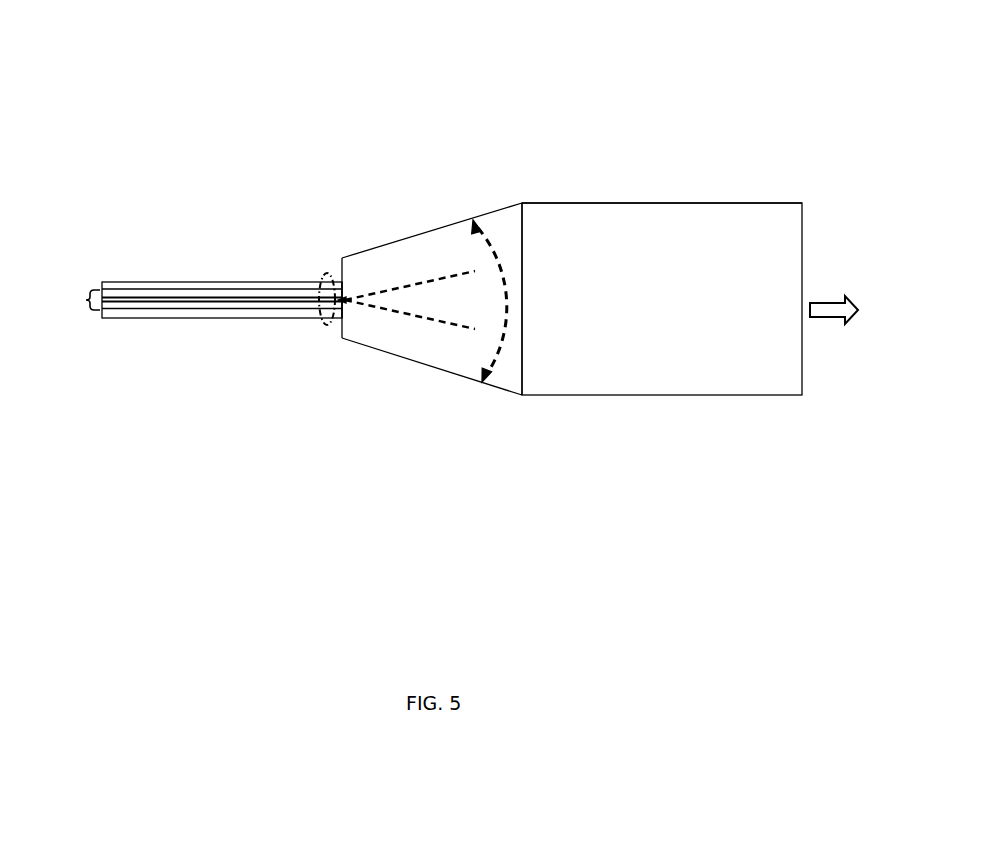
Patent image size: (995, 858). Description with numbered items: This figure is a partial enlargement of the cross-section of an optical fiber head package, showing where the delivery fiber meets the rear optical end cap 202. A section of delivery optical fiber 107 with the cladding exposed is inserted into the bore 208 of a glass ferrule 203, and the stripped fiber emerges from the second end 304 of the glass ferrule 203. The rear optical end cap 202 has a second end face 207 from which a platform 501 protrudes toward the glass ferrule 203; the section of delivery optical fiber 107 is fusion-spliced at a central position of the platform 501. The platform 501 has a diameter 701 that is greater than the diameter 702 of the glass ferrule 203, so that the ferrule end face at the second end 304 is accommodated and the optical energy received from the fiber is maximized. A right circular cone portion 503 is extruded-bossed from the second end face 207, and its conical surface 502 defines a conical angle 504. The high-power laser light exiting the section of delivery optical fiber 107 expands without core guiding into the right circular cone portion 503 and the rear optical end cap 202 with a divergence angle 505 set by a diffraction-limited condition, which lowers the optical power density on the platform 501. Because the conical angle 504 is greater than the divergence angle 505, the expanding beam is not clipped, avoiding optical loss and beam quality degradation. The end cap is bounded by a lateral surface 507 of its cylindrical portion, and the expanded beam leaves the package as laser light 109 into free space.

The section of delivery optical fiber with the cladding exposed 107 is at (193, 302).
The laser light 109 is at (830, 297).
The rear optical end cap 202 is at (677, 368).
The glass ferrule 203 is at (185, 278).
The second end face 207 is at (522, 348).
The bore 208 is at (87, 300).
The second end 304 is at (322, 323).
The platform 501 is at (340, 328).
The conical surface 502 is at (423, 232).
The right circular cone portion 503 is at (397, 341).
The conical angle 504 is at (495, 242).
The divergence angle 505 is at (443, 280).
The lateral surface 507 is at (643, 203).
The diameter of the platform 701 is at (343, 255).
The diameter of the glass ferrule 702 is at (340, 280).